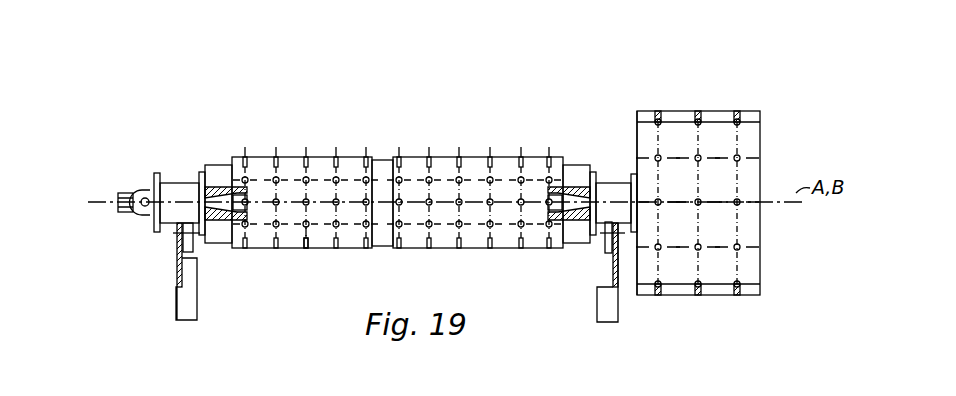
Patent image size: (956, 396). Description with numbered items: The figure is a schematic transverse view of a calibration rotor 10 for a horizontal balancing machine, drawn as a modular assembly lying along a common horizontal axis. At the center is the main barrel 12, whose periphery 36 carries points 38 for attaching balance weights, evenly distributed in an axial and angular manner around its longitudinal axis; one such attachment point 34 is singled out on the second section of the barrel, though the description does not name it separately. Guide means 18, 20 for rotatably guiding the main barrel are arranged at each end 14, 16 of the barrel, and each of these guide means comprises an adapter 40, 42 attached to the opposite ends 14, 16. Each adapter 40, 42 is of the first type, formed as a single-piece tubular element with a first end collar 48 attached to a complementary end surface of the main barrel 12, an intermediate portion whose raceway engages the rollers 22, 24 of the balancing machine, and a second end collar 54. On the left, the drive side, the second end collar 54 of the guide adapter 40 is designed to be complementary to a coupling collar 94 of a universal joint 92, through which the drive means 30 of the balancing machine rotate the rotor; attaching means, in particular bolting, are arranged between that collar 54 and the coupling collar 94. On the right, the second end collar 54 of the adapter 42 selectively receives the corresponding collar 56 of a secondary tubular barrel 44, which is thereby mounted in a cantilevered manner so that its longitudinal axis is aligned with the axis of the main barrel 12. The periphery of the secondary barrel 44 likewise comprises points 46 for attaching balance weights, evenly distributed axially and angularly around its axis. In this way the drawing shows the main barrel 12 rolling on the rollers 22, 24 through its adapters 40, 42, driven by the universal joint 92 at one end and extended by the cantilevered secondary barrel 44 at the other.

The calibration rotor 10 is at (488, 120).
The main barrel 12 is at (320, 147).
The first end of main barrel 14 is at (212, 172).
The second end of main barrel 16 is at (588, 175).
The guide means 18 is at (166, 265).
The guide means 20 is at (590, 265).
The roller 22 is at (187, 248).
The roller 24 is at (601, 245).
The drive means 30 is at (98, 186).
The pin 34 is at (408, 180).
The periphery of main barrel 36 is at (294, 238).
The points for attaching balance weights 38 is at (334, 228).
The adapter 40 is at (180, 185).
The adapter 42 is at (620, 190).
The secondary tubular barrel 44 is at (746, 296).
The points for attaching balance weights 46 is at (708, 293).
The first end collar 48 is at (596, 178).
The second end collar 54 is at (167, 235).
The collar of secondary barrel 56 is at (636, 268).
The universal joint 92 is at (130, 206).
The coupling collar 94 is at (157, 231).